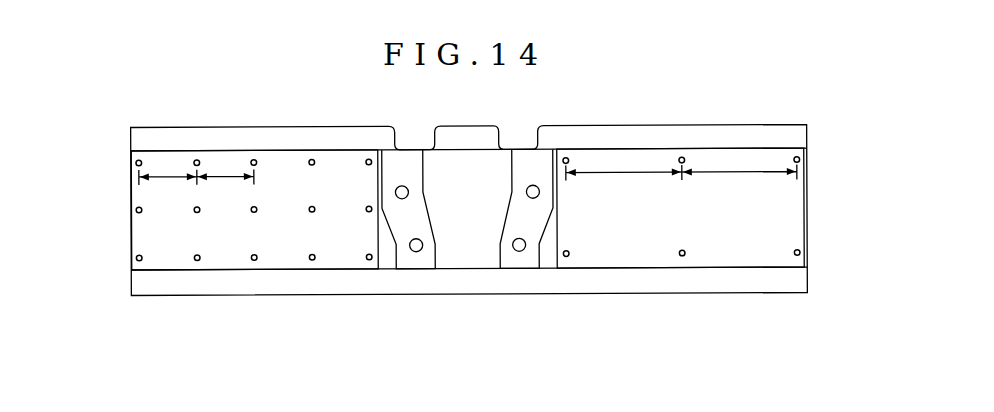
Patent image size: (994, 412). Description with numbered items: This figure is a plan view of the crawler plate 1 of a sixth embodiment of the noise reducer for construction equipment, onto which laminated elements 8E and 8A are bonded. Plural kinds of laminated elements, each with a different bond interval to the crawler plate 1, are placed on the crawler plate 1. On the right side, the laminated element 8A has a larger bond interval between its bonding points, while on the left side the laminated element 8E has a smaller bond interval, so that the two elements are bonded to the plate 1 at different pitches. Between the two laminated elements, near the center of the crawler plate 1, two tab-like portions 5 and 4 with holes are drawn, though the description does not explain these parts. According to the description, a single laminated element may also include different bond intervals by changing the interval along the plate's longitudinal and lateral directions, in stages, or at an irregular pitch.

The crawler plate 1 is at (315, 285).
The connecting tab 4 is at (517, 260).
The connecting tab 5 is at (417, 260).
The laminated element 8A is at (792, 199).
The laminated element 8E is at (141, 226).